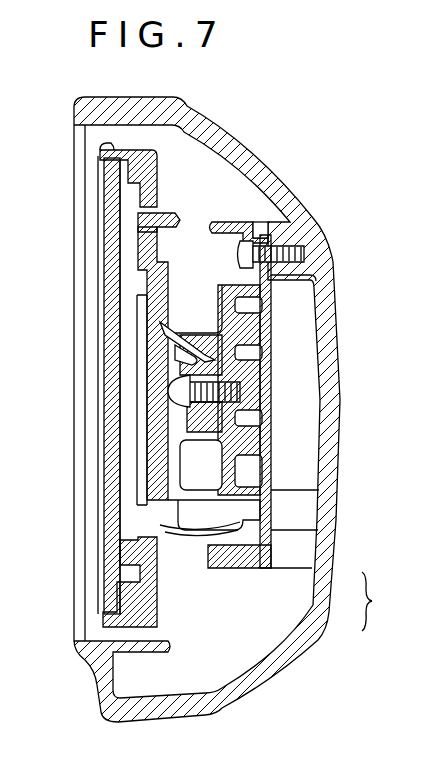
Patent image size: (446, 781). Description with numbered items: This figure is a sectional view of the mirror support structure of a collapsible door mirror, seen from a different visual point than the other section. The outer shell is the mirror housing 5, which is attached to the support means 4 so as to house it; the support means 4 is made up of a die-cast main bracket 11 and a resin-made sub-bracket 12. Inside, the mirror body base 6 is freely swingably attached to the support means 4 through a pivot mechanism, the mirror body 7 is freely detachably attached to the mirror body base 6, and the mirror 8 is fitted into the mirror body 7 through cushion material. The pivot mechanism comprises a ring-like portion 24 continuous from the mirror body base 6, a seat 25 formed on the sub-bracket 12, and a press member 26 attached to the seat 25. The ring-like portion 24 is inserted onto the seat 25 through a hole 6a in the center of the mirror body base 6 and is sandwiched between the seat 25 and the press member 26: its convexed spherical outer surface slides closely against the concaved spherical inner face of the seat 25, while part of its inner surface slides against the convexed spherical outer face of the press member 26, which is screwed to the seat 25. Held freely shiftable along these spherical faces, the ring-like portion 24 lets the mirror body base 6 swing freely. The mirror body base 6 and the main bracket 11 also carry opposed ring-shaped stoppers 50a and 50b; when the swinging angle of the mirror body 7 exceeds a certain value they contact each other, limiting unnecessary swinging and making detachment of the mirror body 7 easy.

The mirror housing 5 is at (330, 394).
The mirror 8 is at (104, 213).
The mirror body 7 is at (152, 177).
The stopper 50b is at (170, 217).
The stopper 50a is at (230, 227).
The mirror body base 6 is at (160, 272).
The hole 6a is at (163, 407).
The ring-like portion 24 is at (177, 340).
The press member 26 is at (168, 367).
The seat 25 is at (245, 343).
The main bracket 11 is at (268, 560).
The sub-bracket 12 is at (153, 558).
The support means 4 is at (377, 601).